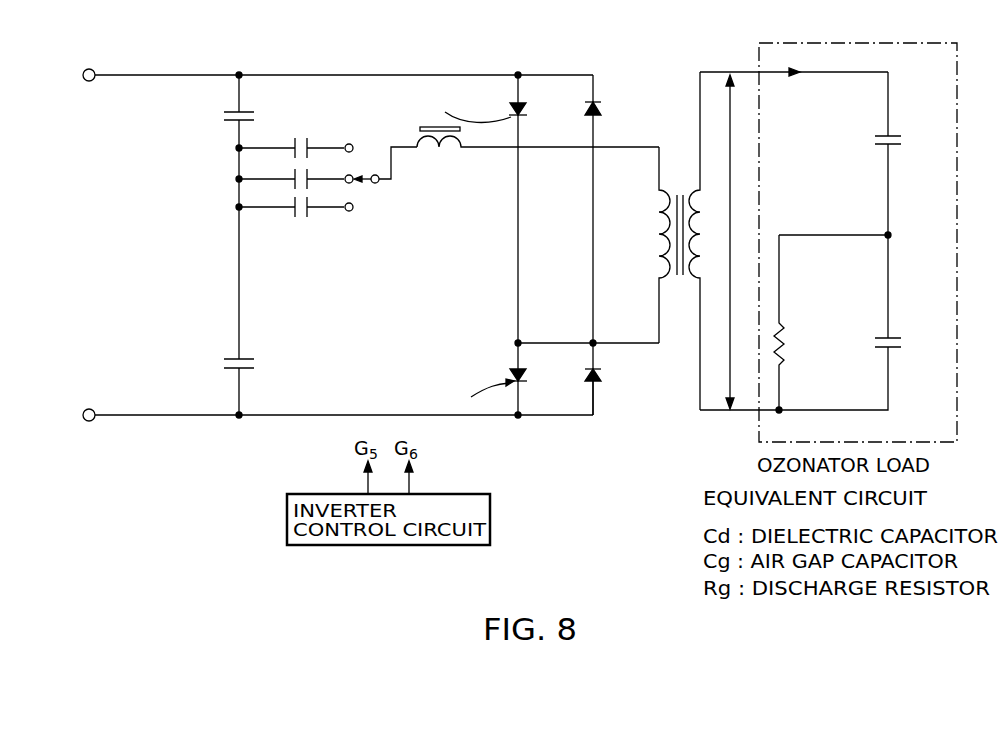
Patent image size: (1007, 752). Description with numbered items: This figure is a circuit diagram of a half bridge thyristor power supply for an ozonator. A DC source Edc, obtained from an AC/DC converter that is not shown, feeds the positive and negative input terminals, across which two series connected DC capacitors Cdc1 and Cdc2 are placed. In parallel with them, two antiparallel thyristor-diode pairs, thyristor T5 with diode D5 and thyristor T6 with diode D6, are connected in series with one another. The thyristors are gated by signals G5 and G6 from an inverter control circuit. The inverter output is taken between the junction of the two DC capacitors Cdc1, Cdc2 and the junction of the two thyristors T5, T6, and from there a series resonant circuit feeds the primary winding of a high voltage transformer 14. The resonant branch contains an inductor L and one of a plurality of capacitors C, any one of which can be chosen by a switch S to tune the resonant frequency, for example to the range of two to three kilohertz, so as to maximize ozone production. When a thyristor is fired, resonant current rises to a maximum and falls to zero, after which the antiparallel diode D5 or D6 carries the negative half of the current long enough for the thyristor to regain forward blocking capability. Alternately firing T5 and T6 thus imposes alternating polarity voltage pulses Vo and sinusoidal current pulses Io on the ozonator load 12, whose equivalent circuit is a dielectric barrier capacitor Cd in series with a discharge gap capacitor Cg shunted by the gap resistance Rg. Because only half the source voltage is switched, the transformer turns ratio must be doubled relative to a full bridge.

The transformer 14 is at (681, 184).
The ozonator load 12 is at (828, 242).
The thyristor T5 is at (531, 209).
The thyristor T6 is at (531, 379).
The diode D5 is at (607, 222).
The diode D6 is at (607, 379).
The gate signal G5 is at (460, 108).
The gate signal G6 is at (476, 395).
The inductor L is at (538, 149).
The switch S is at (385, 175).
The capacitor C is at (294, 189).
The DC capacitor Cdc1 is at (262, 111).
The DC capacitor Cdc2 is at (260, 311).
The capacitor of the dielectric barrier Cd is at (903, 143).
The capacitor of the discharge gap Cg is at (902, 299).
The resistance of the discharge gap Rg is at (793, 322).
The voltage pulses Vo is at (729, 242).
The current pulses Io is at (794, 60).
The DC source voltage Edc is at (101, 245).